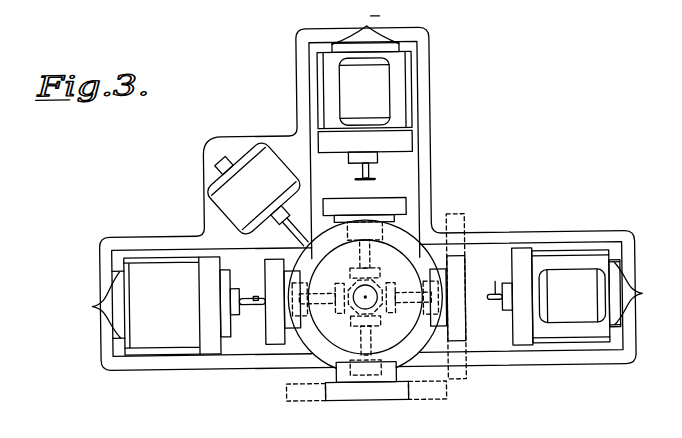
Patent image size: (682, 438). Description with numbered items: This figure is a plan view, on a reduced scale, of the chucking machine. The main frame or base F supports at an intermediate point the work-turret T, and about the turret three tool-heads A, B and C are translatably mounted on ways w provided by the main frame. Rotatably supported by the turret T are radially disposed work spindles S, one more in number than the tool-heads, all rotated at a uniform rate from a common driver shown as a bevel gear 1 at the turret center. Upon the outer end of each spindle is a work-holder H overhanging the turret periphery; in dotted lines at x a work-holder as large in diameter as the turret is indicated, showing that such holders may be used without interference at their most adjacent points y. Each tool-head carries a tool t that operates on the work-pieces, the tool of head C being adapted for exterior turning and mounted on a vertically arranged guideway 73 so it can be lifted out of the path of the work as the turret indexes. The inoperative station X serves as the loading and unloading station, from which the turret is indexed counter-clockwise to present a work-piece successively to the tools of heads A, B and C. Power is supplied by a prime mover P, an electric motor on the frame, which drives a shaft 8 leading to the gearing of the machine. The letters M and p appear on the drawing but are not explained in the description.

The main frame F is at (425, 188).
The work-turret T is at (403, 249).
The loading and unloading station X is at (367, 398).
The work spindles S is at (326, 287).
The bevel gear 1 is at (378, 285).
The work-holder H is at (283, 388).
The tool-head C is at (203, 343).
The guideway 73 is at (222, 322).
The tool-head A is at (522, 257).
The tool-head B is at (403, 139).
The motors M is at (472, 190).
The prime mover P is at (253, 189).
The shaft 8 is at (297, 232).
The tools t is at (251, 305).
The ways w is at (362, 173).
The work-holder of maximum size x is at (426, 400).
The most adjacent points y is at (447, 382).
The p (partial label) p is at (499, 435).